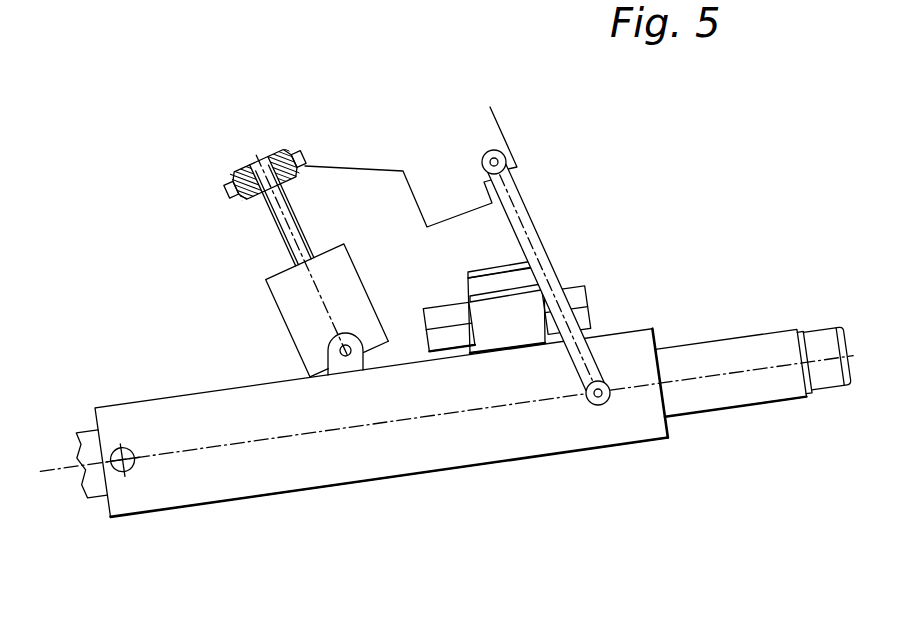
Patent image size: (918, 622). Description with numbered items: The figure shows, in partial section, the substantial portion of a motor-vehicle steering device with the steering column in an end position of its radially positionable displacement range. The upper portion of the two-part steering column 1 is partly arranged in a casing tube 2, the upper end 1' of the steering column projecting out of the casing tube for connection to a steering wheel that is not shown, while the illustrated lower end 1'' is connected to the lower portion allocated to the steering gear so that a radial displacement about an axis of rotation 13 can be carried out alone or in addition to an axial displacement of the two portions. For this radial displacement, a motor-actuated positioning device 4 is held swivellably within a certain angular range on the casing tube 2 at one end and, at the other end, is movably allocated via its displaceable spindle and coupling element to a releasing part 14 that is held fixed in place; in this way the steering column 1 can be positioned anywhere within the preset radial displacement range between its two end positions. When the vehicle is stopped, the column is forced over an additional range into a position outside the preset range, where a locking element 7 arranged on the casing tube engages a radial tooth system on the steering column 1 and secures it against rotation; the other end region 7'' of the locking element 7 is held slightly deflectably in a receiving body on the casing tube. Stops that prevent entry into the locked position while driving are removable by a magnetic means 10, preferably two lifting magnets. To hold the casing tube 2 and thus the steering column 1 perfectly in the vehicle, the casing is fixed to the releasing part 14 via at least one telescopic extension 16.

The steering column 1 is at (741, 469).
The upper end of the steering column 1' is at (803, 470).
The lower end of the steering column 1'' is at (71, 521).
The casing tube 2 is at (197, 438).
The motor-actuated positioning device 4 is at (312, 317).
The locking element 7 is at (419, 166).
The other end region of the locking element 7'' is at (443, 173).
The magnetic means 10 is at (553, 345).
The axis of rotation 13 is at (126, 471).
The releasing part 14 is at (478, 140).
The telescopic extension 16 is at (523, 203).